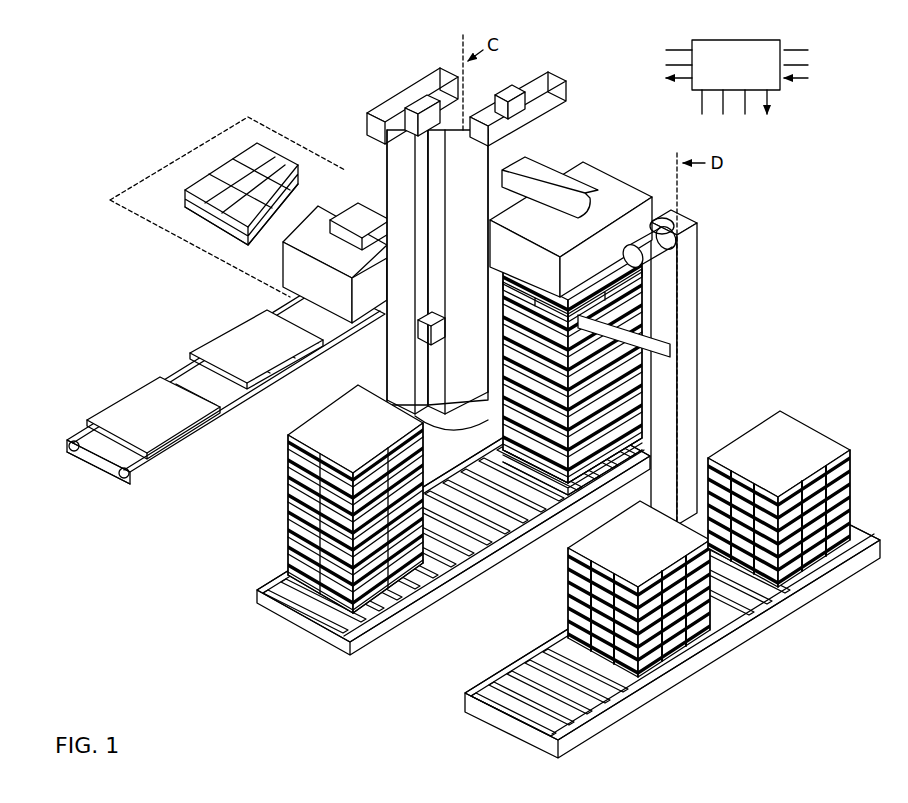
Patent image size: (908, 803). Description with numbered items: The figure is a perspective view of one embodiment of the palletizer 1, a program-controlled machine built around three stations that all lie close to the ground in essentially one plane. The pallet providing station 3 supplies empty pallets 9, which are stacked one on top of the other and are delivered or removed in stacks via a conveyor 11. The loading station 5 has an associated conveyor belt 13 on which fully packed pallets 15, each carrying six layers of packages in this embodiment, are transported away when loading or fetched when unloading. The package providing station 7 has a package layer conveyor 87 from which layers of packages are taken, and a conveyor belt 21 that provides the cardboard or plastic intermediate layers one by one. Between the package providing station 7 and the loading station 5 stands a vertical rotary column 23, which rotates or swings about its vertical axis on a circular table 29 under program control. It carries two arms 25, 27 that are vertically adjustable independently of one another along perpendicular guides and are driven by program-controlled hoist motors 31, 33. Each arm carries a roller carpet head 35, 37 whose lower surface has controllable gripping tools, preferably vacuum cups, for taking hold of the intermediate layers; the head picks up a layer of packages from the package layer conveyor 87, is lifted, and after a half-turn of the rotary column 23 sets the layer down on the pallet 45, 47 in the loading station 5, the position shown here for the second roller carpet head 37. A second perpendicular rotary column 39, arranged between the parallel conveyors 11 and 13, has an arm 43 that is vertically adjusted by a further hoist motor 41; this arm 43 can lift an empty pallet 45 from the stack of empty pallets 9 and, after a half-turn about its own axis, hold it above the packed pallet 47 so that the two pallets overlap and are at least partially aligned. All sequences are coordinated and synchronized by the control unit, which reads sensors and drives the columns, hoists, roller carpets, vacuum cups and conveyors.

The palletizer 1 is at (820, 123).
The pallet providing station 3 is at (826, 608).
The loading station 5 is at (500, 542).
The package providing station 7 is at (278, 298).
The empty pallets 9 is at (826, 444).
The conveyor 11 is at (484, 730).
The conveyor belt 13 is at (284, 625).
The fully packed pallets 15 is at (329, 499).
The conveyor belt 21 is at (84, 471).
The rotary column 23 is at (382, 92).
The arm 25 is at (368, 200).
The arm 27 is at (597, 168).
The circular table 29 is at (438, 428).
The hoist motor 31 is at (367, 122).
The hoist motor 33 is at (563, 92).
The roller carpet head 35 is at (283, 268).
The roller carpet head 37 is at (640, 190).
The rotary column 39 is at (690, 410).
The hoist motor 41 is at (670, 262).
The arm 43 is at (672, 350).
The empty pallet 45 is at (655, 316).
The packed pallet 47 is at (590, 488).
The package layer conveyor 87 is at (176, 211).